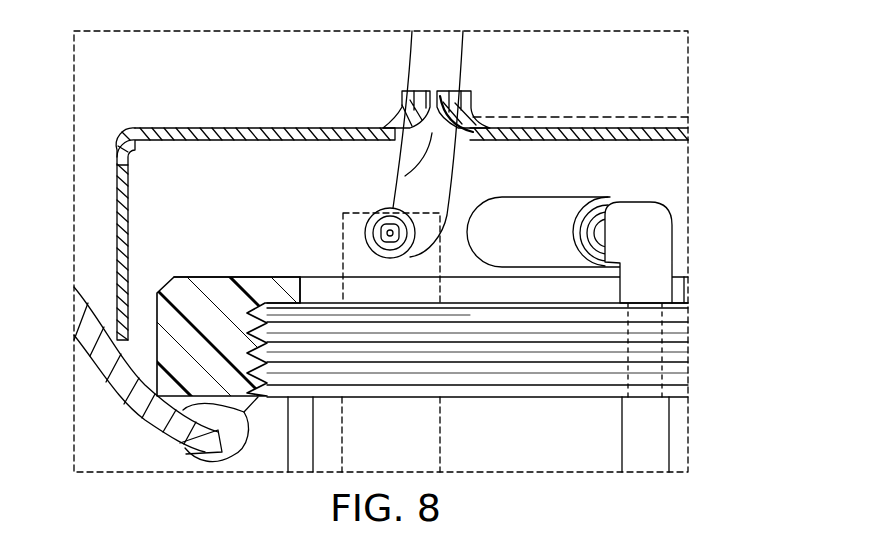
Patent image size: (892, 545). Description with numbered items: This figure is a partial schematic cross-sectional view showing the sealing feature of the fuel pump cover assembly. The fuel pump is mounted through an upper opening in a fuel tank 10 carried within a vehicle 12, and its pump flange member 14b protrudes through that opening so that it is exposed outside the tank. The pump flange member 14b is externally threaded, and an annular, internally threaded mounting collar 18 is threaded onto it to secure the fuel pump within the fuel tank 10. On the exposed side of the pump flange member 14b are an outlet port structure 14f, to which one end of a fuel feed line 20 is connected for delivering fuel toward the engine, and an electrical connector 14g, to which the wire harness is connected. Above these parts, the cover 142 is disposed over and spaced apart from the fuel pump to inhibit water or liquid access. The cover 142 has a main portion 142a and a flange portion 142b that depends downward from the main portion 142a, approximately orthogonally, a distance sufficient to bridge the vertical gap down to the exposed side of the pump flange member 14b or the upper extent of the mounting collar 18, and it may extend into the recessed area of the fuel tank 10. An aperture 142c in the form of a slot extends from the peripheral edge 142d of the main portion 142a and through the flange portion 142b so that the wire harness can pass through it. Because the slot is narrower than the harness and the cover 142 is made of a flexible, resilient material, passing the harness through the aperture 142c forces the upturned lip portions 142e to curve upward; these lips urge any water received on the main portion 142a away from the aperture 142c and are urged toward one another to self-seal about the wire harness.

The fuel tank 10 is at (112, 381).
The vehicle 12 is at (427, 52).
The pump flange member 14b is at (523, 367).
The outlet port structure 14f is at (650, 242).
The electrical connector 14g is at (343, 258).
The mounting collar 18 is at (196, 338).
The fuel feed line 20 is at (560, 197).
The cover 142 is at (570, 97).
The main portion 142a is at (633, 127).
The flange portion 142b is at (128, 250).
The aperture 142c is at (432, 135).
The peripheral edge 142d is at (130, 130).
The upturned lip portions 142e is at (398, 110).